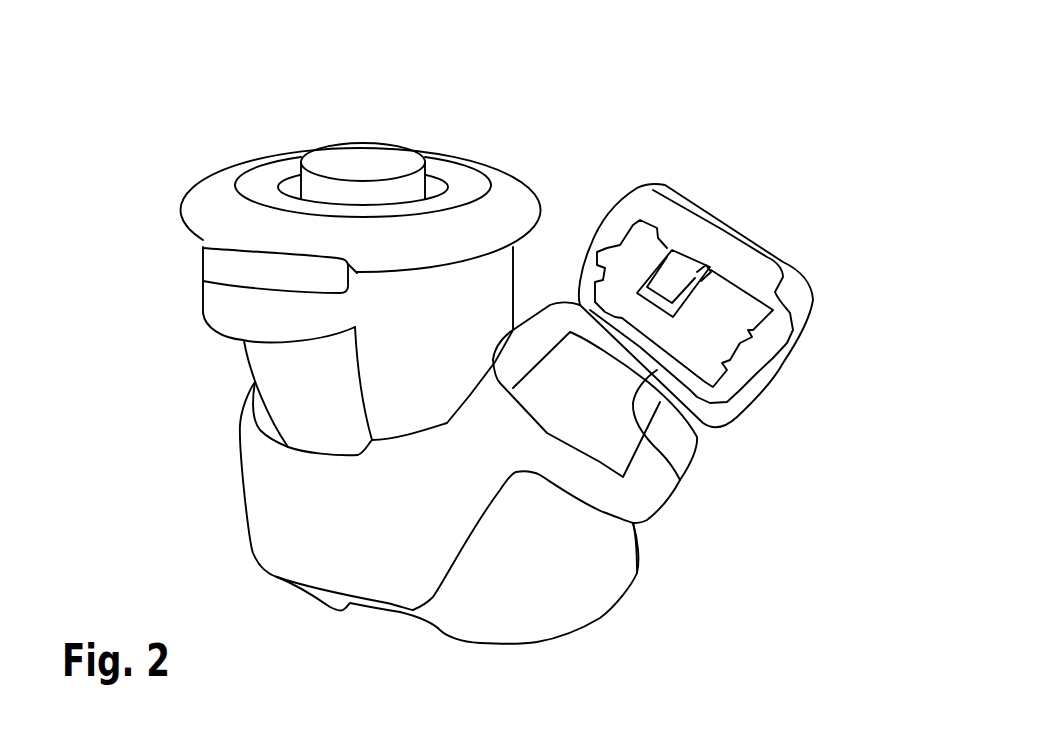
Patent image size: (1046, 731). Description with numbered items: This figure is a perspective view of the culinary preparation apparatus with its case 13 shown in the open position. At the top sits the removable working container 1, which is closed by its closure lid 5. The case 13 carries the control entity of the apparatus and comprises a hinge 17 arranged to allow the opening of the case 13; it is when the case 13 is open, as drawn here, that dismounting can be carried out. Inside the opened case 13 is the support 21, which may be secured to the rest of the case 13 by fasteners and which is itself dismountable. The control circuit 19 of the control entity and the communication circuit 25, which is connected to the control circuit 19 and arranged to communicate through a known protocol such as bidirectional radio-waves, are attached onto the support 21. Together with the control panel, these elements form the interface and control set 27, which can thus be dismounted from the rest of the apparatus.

The working container 1 is at (483, 148).
The closure lid 5 is at (218, 210).
The case 13 is at (745, 437).
The hinge 17 is at (680, 480).
The control circuit 19 is at (713, 298).
The support 21 is at (647, 212).
The communication circuit 25 is at (677, 262).
The interface and control set 27 is at (828, 320).